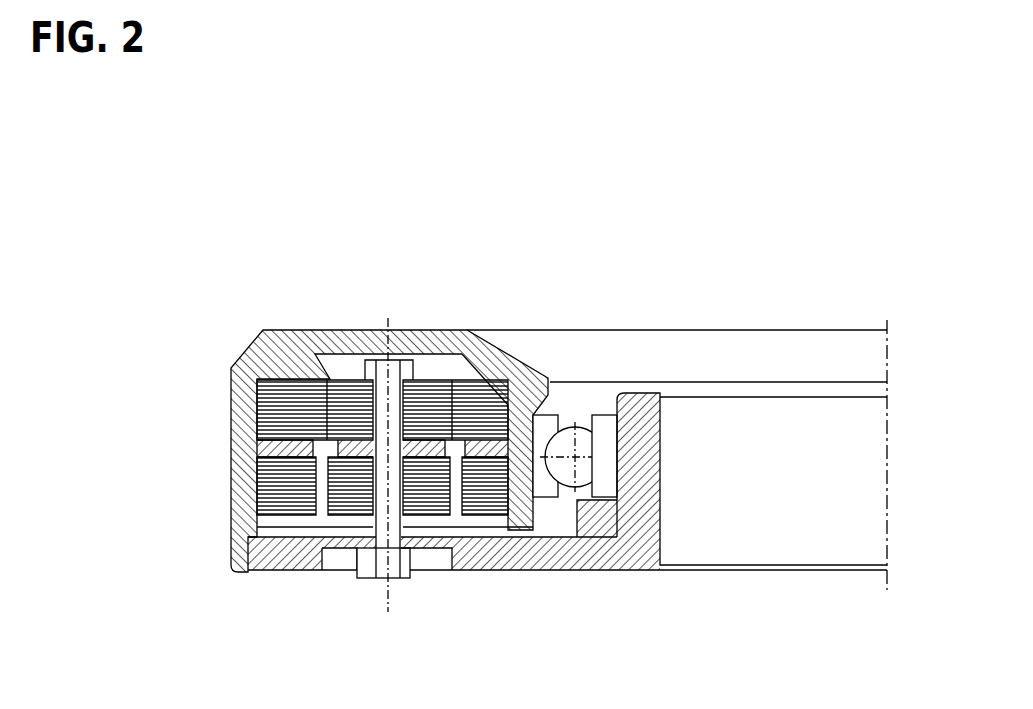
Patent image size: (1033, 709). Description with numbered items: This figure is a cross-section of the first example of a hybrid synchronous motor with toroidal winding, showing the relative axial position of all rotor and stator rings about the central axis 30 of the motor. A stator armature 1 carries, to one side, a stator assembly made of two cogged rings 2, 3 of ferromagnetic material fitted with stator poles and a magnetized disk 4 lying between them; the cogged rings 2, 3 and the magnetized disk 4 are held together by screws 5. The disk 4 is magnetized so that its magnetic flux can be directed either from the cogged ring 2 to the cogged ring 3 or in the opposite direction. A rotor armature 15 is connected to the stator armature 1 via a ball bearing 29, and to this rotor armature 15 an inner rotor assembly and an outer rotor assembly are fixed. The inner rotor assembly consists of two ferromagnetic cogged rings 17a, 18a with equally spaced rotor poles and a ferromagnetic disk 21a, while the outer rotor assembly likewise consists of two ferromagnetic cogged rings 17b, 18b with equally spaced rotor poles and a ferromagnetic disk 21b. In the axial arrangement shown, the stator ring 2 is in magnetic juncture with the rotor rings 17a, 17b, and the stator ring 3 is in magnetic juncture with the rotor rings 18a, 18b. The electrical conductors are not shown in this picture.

The stator armature 1 is at (617, 540).
The cogged ring 2 is at (427, 395).
The cogged ring 3 is at (425, 485).
The magnetized disk 4 is at (360, 395).
The screws 5 is at (375, 525).
The rotor armature 15 is at (292, 410).
The cogged ring 17a is at (485, 405).
The cogged ring 17b is at (265, 355).
The cogged ring 18a is at (480, 483).
The cogged ring 18b is at (290, 490).
The ferromagnetic disk 21a is at (568, 415).
The ferromagnetic disk 21b is at (236, 450).
The ball bearing 29 is at (612, 417).
The central axis 30 is at (885, 330).